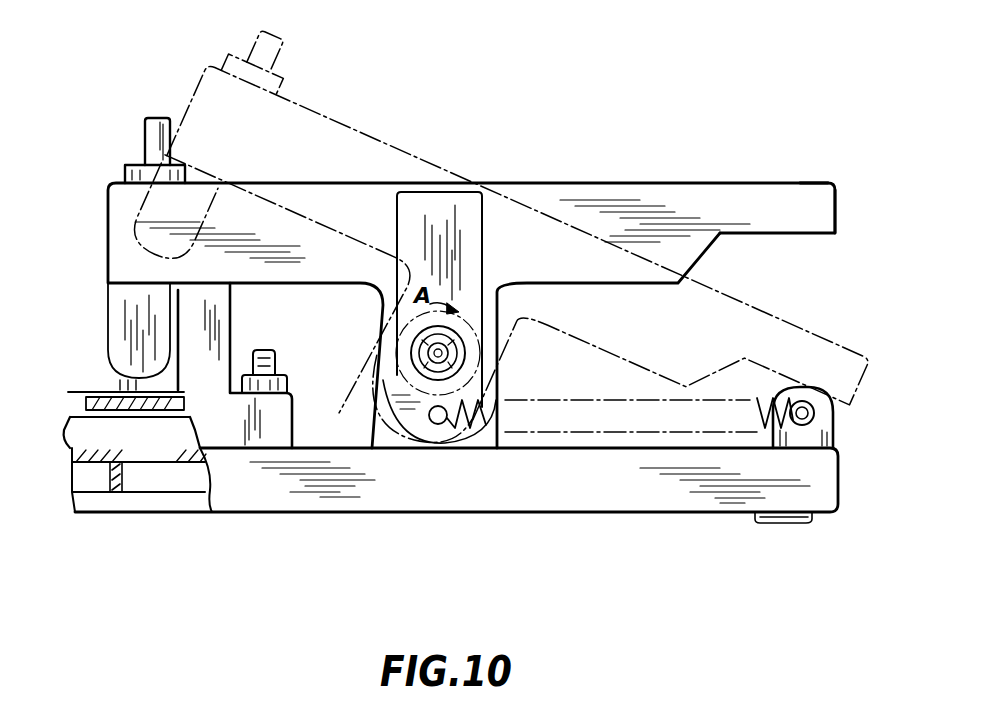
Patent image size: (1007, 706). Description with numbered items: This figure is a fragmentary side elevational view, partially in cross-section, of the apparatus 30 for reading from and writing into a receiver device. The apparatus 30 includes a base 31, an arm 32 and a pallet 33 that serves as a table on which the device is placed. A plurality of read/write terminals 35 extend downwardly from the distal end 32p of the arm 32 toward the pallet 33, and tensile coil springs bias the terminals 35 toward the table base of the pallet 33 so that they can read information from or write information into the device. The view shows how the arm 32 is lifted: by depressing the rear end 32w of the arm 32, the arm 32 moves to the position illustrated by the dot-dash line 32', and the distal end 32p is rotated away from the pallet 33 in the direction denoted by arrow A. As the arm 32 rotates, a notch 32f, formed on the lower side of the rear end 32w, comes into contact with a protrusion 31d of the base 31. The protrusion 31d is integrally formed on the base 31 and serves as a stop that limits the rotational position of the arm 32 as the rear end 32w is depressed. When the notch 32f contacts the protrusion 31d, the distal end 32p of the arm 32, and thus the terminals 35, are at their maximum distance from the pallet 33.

The apparatus 30 is at (132, 142).
The base 31 is at (558, 492).
The protrusion 31d is at (830, 432).
The arm 32 is at (468, 284).
The notch 32f is at (774, 233).
The rear end 32w is at (832, 192).
The dot-dash line 32' is at (494, 308).
The distal end 32p is at (137, 213).
The pallet 33 is at (258, 400).
The read/write terminals 35 is at (110, 379).